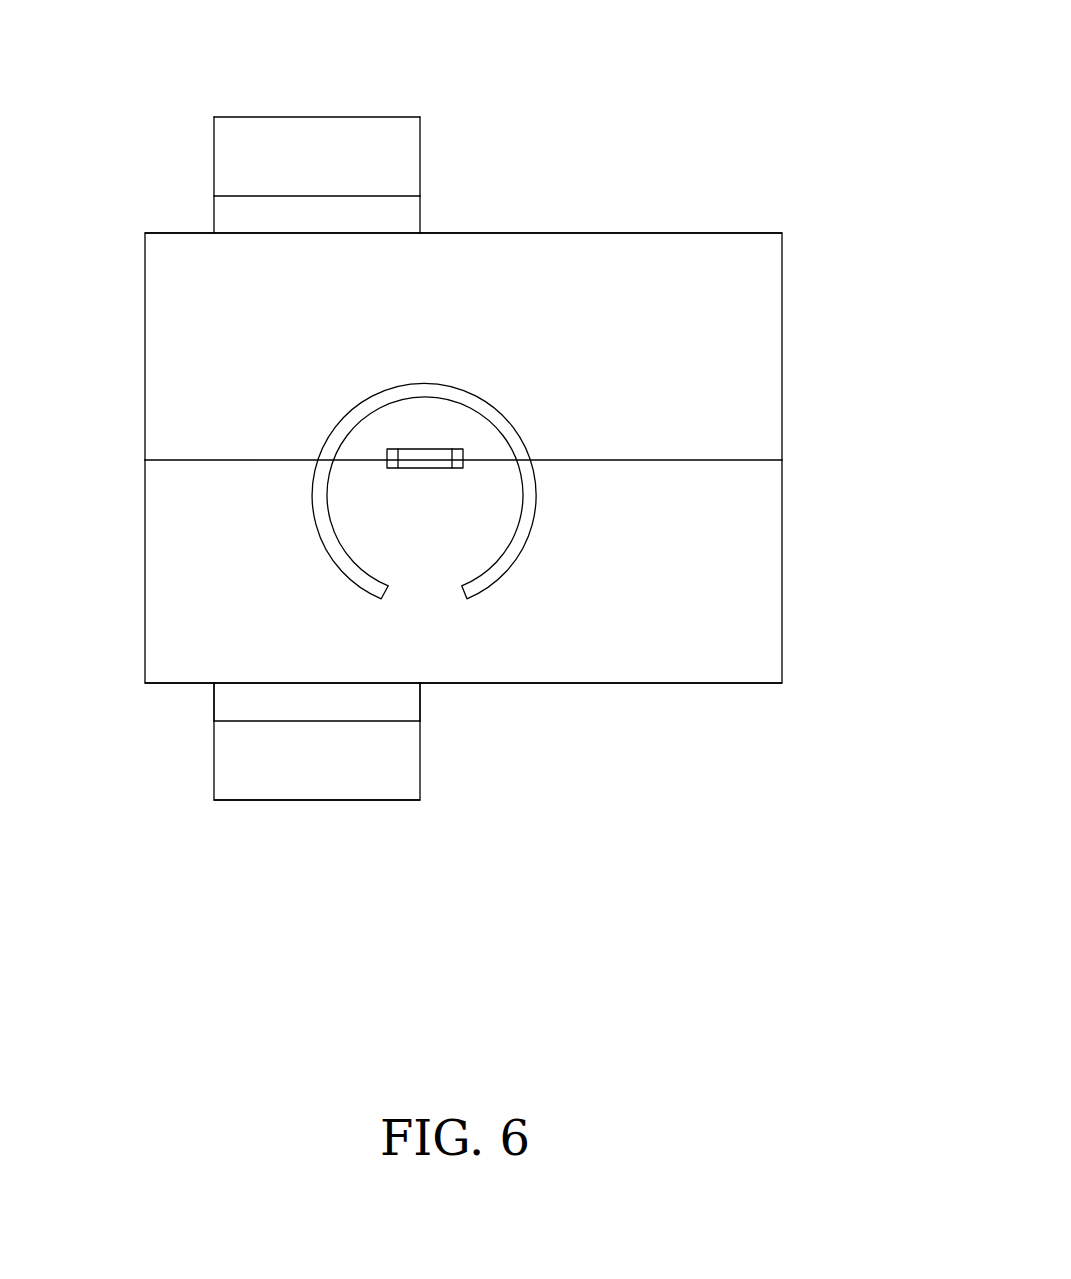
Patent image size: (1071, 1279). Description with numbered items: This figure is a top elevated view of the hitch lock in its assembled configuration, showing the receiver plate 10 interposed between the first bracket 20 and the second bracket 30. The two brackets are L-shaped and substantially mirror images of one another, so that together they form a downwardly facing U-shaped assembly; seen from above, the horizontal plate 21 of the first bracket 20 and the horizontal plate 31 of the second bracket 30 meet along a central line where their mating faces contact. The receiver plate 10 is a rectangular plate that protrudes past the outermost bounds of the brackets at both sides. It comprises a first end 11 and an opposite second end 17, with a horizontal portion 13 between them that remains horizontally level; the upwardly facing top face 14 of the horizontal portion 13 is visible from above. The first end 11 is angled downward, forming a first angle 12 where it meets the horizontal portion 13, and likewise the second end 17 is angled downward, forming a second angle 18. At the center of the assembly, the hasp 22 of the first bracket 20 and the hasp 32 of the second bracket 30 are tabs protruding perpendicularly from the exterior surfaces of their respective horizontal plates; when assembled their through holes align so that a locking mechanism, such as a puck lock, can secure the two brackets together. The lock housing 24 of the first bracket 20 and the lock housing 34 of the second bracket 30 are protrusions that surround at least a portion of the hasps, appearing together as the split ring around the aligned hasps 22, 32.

The receiver plate 10 is at (296, 459).
The first end 11 is at (291, 800).
The first angle 12 is at (249, 722).
The horizontal portion 13 is at (296, 470).
The top face 14 is at (401, 207).
The second end 17 is at (372, 117).
The second angle 18 is at (229, 196).
The first bracket 20 is at (508, 598).
The horizontal plate 21 is at (740, 660).
The hasp 22 is at (409, 428).
The lock housing 24 is at (449, 488).
The second bracket 30 is at (509, 323).
The horizontal plate 31 is at (645, 275).
The hasp 32 is at (425, 452).
The lock housing 34 is at (492, 410).